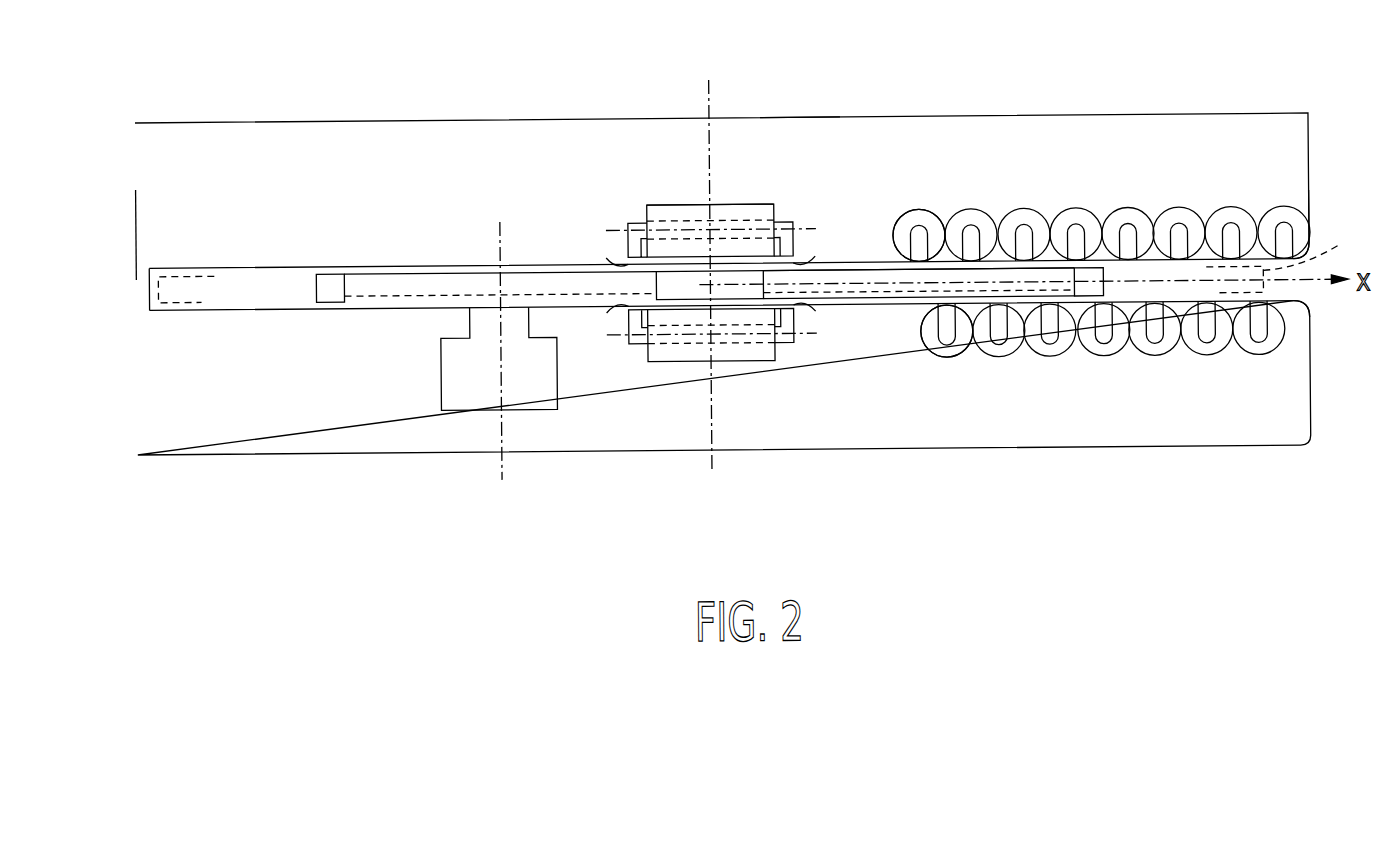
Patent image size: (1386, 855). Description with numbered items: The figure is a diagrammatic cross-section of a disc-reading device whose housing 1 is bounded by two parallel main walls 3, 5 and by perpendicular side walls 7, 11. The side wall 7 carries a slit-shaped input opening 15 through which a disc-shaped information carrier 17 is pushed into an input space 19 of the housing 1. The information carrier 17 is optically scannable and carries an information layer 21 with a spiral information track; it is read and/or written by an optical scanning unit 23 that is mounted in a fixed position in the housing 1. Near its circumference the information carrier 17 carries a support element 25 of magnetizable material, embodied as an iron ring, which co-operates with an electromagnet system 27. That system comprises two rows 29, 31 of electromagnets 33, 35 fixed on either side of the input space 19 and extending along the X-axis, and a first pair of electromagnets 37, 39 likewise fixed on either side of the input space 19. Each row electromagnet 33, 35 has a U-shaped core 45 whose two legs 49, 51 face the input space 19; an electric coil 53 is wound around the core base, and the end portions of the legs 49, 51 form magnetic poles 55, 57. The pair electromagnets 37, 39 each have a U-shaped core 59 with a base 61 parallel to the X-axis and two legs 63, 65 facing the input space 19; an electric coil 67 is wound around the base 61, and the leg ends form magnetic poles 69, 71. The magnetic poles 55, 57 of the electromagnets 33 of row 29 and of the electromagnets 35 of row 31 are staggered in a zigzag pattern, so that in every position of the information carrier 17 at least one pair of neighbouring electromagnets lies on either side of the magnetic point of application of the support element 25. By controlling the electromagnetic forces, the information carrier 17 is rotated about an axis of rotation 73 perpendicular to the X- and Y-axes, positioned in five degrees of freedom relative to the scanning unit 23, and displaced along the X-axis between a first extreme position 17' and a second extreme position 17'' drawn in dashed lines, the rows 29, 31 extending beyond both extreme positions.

The housing 1 is at (248, 506).
The main wall 3 is at (856, 456).
The main wall 5 is at (800, 123).
The side wall 7 is at (1308, 160).
The side wall 11 is at (135, 232).
The input opening 15 is at (1300, 311).
The information carrier 17 is at (721, 261).
The first extreme position 17' is at (1288, 260).
The second extreme position 17'' is at (186, 319).
The input space 19 is at (385, 272).
The information layer 21 is at (378, 302).
The optical scanning unit 23 is at (445, 402).
The support element 25 is at (330, 280).
The electromagnet system 27 is at (636, 153).
The row of electromagnets 29 is at (1094, 163).
The row of electromagnets 31 is at (1097, 398).
The electromagnet 33 is at (1093, 196).
The electromagnet 35 is at (945, 347).
The electromagnet 37 is at (755, 215).
The electromagnet 39 is at (755, 367).
The U-shaped core 45 is at (1085, 196).
The leg 49 is at (1085, 196).
The leg 51 is at (918, 269).
The electric coil 53 is at (905, 229).
The magnetic pole 55 is at (919, 315).
The magnetic pole 57 is at (944, 302).
The U-shaped core 59 is at (710, 286).
The base 61 is at (684, 230).
The leg 63 is at (632, 232).
The leg 65 is at (789, 232).
The electric coil 67 is at (727, 212).
The magnetic pole 69 is at (612, 266).
The magnetic pole 71 is at (806, 266).
The axis of rotation 73 is at (709, 80).